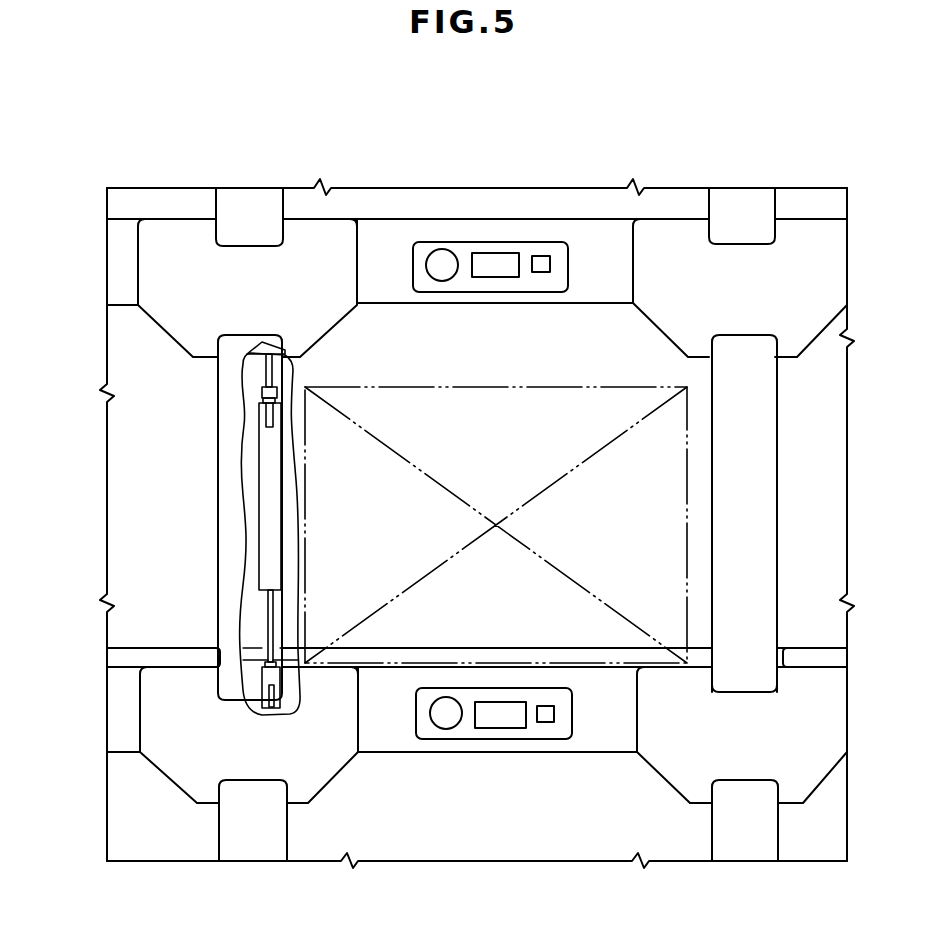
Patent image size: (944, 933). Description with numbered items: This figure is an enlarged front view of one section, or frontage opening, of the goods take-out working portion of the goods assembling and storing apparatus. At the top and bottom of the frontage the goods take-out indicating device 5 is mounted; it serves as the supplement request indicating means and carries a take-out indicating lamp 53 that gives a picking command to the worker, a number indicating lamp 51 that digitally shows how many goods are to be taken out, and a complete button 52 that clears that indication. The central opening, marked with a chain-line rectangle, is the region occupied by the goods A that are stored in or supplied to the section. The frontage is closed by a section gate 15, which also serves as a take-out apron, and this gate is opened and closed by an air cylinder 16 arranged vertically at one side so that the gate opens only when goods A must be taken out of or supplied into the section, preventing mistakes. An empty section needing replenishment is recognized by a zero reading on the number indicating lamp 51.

The goods take-out indicating device 5 is at (513, 529).
The number indicating lamp 51 is at (482, 265).
The complete button 52 is at (545, 258).
The take-out indicating lamp 53 is at (435, 235).
The section gate 15 is at (575, 655).
The air cylinder 16 is at (270, 497).
The goods A is at (563, 410).